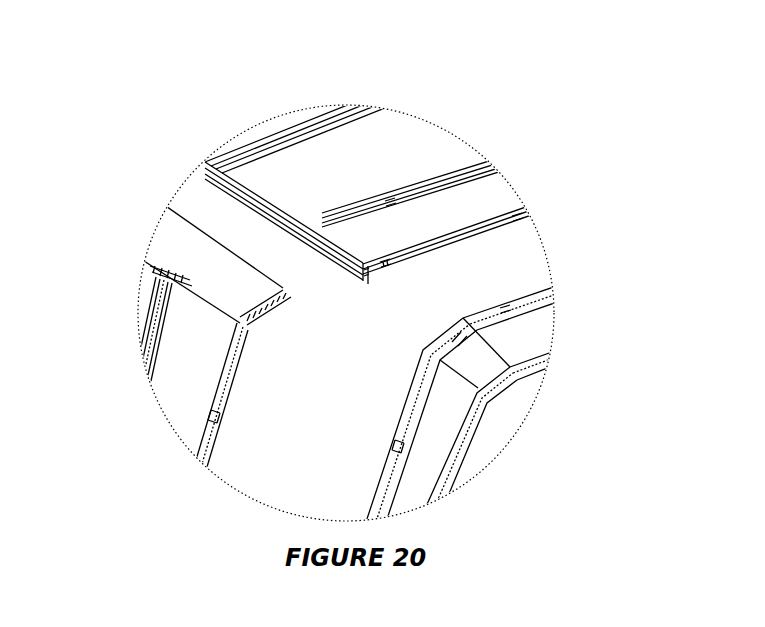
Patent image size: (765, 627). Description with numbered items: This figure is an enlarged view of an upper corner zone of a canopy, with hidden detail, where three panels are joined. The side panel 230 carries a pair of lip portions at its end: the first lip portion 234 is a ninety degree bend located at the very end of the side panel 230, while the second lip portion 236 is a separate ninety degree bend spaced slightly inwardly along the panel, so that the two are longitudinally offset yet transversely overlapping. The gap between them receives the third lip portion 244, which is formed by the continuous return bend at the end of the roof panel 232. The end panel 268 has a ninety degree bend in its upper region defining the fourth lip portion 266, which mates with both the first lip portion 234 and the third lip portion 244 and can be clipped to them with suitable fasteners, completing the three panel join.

The side panel 230 is at (142, 402).
The roof panel 232 is at (275, 112).
The first lip portion 234 is at (253, 328).
The second lip portion 236 is at (288, 291).
The third lip portion 244 is at (366, 272).
The fourth lip portion 266 is at (427, 353).
The end panel 268 is at (568, 314).